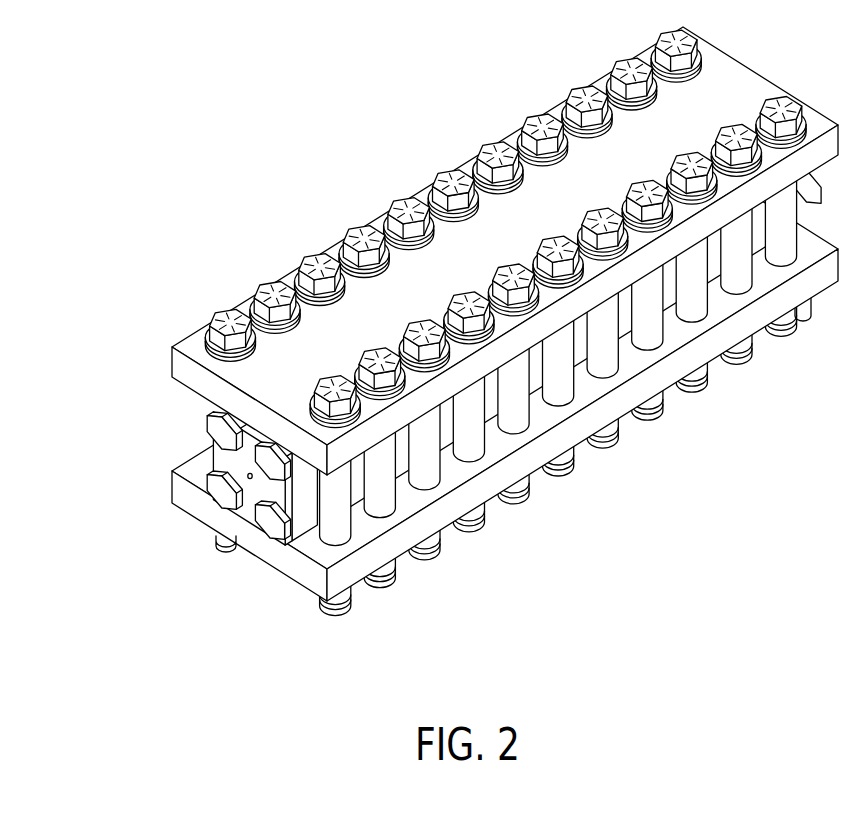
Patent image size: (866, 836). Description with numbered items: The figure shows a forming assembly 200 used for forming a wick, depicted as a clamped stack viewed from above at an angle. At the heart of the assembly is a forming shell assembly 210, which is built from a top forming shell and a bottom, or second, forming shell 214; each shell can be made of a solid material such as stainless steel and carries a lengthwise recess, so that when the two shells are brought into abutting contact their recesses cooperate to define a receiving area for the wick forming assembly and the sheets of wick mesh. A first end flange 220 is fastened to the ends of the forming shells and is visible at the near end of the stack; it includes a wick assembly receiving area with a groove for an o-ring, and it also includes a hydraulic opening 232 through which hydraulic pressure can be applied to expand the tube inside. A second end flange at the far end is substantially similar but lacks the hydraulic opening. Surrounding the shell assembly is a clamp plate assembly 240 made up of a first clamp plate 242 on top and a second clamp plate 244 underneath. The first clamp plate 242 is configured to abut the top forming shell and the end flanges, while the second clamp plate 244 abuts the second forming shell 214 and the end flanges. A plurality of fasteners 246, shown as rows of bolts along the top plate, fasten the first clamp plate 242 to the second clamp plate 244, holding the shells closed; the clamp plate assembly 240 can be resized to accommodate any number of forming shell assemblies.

The forming assembly 200 is at (437, 366).
The forming shell assembly 210 is at (177, 546).
The second forming shell 214 is at (214, 435).
The first end flange 220 is at (247, 503).
The hydraulic opening 232 is at (248, 478).
The clamp plate assembly 240 is at (439, 251).
The first clamp plate 242 is at (193, 372).
The second clamp plate 244 is at (315, 583).
The fasteners 246 is at (415, 148).